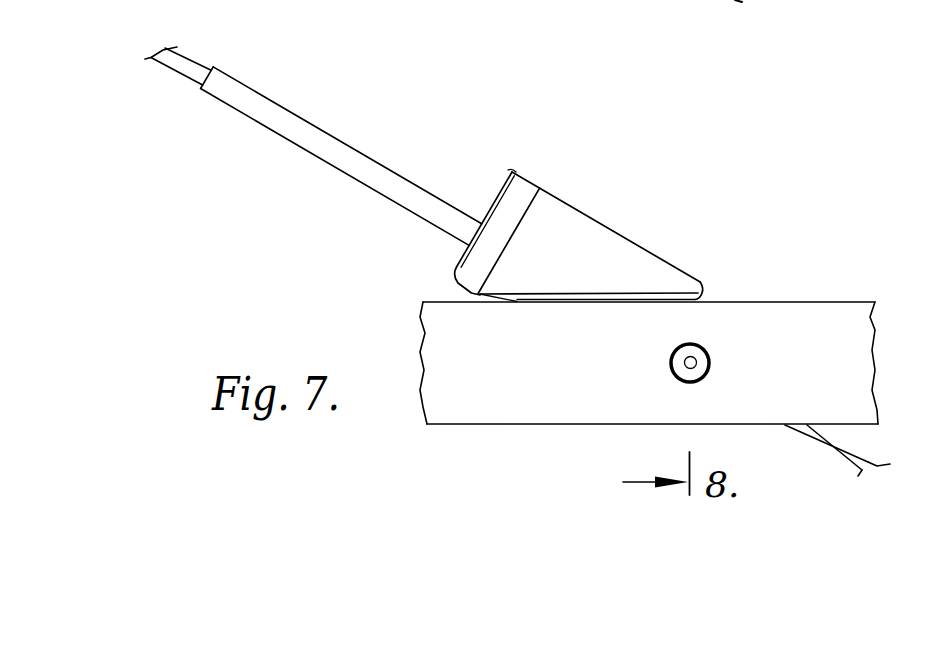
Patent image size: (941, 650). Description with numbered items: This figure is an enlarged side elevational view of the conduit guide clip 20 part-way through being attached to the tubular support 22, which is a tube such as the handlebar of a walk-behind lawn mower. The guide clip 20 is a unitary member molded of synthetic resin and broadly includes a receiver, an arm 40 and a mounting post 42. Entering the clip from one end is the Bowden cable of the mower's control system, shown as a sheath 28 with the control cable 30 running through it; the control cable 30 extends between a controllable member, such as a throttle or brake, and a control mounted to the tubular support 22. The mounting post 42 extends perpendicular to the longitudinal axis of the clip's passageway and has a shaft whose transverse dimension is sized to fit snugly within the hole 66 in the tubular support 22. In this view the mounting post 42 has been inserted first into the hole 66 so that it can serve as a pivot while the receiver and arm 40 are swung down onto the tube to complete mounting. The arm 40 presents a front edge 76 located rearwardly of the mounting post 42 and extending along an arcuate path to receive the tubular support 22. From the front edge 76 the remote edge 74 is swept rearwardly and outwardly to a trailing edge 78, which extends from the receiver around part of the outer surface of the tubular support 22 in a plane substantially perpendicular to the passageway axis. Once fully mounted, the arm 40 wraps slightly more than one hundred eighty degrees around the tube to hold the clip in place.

The conduit guide clip 20 is at (619, 249).
The tubular support 22 is at (845, 302).
The sheath 28 is at (317, 140).
The control cable 30 is at (190, 66).
The arm 40 is at (618, 257).
The mounting post 42 is at (697, 370).
The hole 66 is at (707, 350).
The remote edge 74 is at (570, 292).
The front edge 76 is at (703, 292).
The trailing edge 78 is at (503, 183).